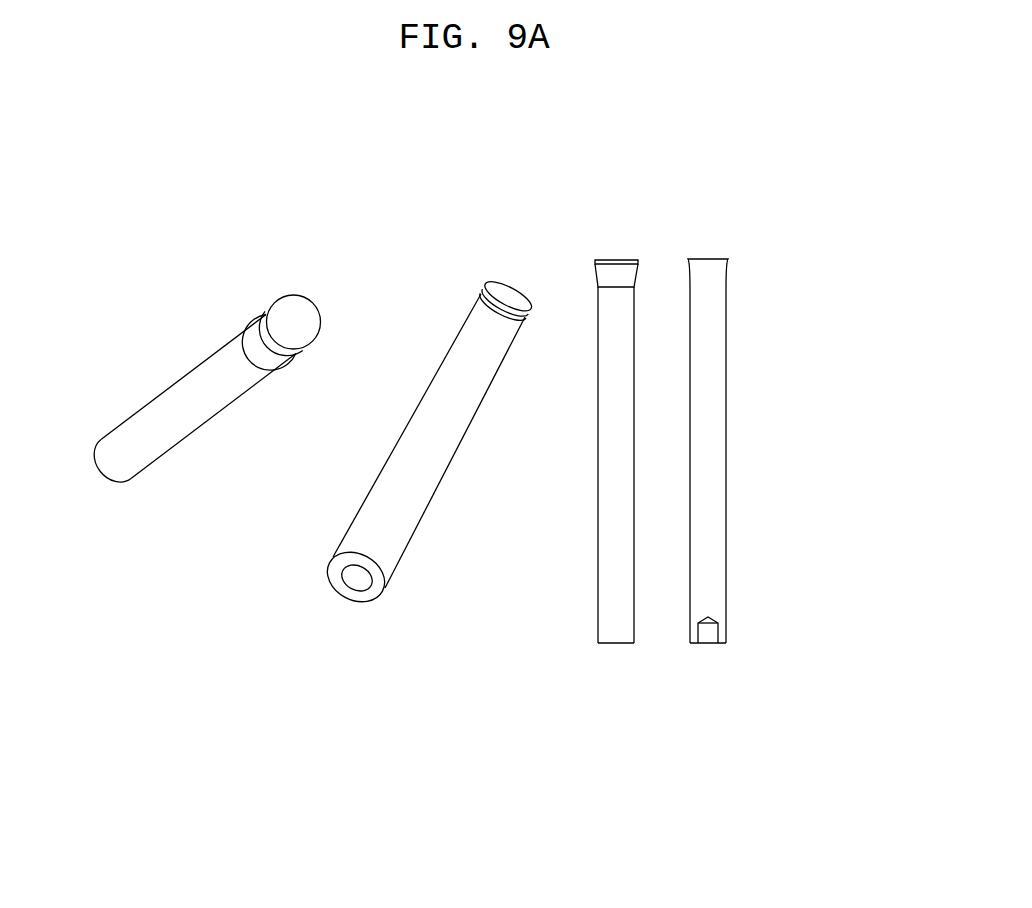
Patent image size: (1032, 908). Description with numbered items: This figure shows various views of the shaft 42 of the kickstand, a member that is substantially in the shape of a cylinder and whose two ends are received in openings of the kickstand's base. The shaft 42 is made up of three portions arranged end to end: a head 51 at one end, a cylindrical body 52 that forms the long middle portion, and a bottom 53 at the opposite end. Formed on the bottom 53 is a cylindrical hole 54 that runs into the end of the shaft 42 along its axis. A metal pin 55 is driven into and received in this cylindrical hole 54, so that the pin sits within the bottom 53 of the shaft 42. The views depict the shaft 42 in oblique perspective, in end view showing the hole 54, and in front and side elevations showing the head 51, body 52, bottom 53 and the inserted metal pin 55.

The shaft 42 is at (230, 163).
The head 51 is at (546, 281).
The body 52 is at (481, 459).
The bottom 53 is at (461, 567).
The cylindrical hole 54 is at (363, 626).
The metal pin 55 is at (739, 685).